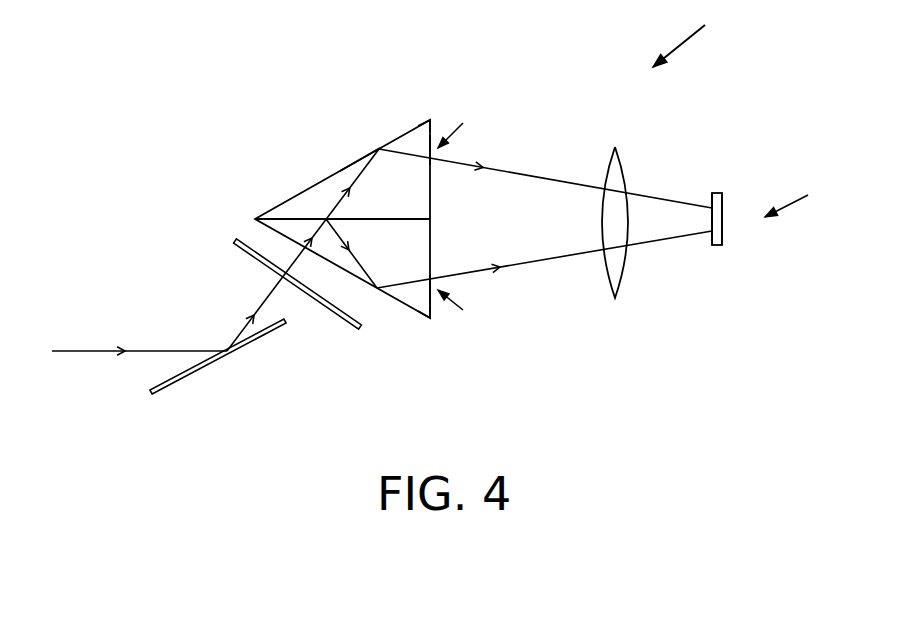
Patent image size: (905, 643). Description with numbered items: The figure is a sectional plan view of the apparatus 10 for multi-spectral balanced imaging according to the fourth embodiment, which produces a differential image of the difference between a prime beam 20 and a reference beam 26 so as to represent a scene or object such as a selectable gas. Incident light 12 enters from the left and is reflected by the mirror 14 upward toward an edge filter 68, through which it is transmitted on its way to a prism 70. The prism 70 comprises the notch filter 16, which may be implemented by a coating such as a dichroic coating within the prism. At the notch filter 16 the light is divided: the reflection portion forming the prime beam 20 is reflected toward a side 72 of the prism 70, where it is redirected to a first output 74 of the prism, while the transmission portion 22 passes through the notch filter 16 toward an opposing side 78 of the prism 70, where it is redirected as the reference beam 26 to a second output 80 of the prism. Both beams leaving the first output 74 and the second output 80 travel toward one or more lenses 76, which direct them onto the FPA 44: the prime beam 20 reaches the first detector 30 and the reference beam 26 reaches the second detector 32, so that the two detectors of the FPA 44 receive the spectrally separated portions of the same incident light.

The apparatus 10 is at (696, 34).
The incident light 12 is at (95, 350).
The mirror 14 is at (178, 383).
The notch filter 16 is at (280, 218).
The prime beam 20 is at (360, 265).
The transmission portion 22 is at (337, 205).
The reference beam 26 is at (410, 157).
The first detector 30 is at (722, 240).
The second detector 32 is at (722, 202).
The FPA 44 is at (779, 209).
The edge filter 68 is at (242, 255).
The prism 70 is at (416, 126).
The side of the prism 72 is at (423, 320).
The first output 74 is at (462, 302).
The lenses 76 is at (619, 160).
The opposing side of the prism 78 is at (360, 157).
The second output 80 is at (462, 134).